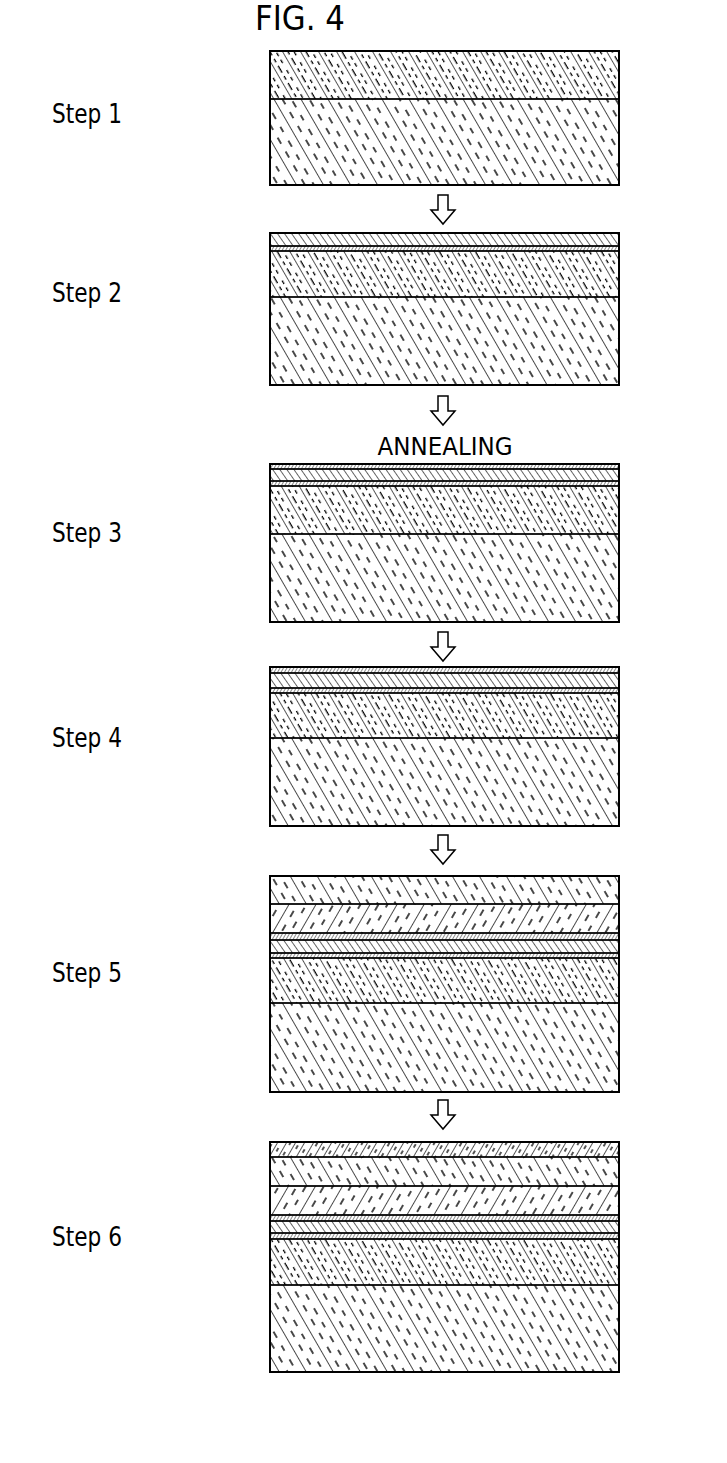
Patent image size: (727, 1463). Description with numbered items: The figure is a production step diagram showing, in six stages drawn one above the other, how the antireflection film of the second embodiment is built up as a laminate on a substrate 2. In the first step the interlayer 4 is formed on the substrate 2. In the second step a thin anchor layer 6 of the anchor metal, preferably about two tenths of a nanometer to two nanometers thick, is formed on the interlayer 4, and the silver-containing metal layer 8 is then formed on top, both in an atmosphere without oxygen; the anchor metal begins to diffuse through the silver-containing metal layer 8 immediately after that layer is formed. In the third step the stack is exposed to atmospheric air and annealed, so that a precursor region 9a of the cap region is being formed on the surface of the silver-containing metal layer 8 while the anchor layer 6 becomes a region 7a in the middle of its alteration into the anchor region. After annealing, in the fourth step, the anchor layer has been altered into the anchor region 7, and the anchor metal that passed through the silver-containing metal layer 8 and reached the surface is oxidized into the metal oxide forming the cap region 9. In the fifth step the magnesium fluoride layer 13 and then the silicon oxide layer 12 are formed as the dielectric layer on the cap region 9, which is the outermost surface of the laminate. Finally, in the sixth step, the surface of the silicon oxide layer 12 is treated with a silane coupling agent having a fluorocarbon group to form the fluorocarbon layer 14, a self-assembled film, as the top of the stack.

The substrate 2 is at (270, 153).
The interlayer 4 is at (270, 76).
The anchor layer 6 is at (270, 249).
The anchor region 7 is at (270, 690).
The region in the middle of alteration into the anchor region 7a is at (270, 484).
The silver-containing metal layer 8 is at (270, 239).
The cap region 9 is at (270, 670).
The precursor region of the cap region 9a is at (270, 466).
The silicon oxide layer 12 is at (270, 890).
The magnesium fluoride layer 13 is at (270, 918).
The fluorocarbon layer 14 is at (270, 1150).